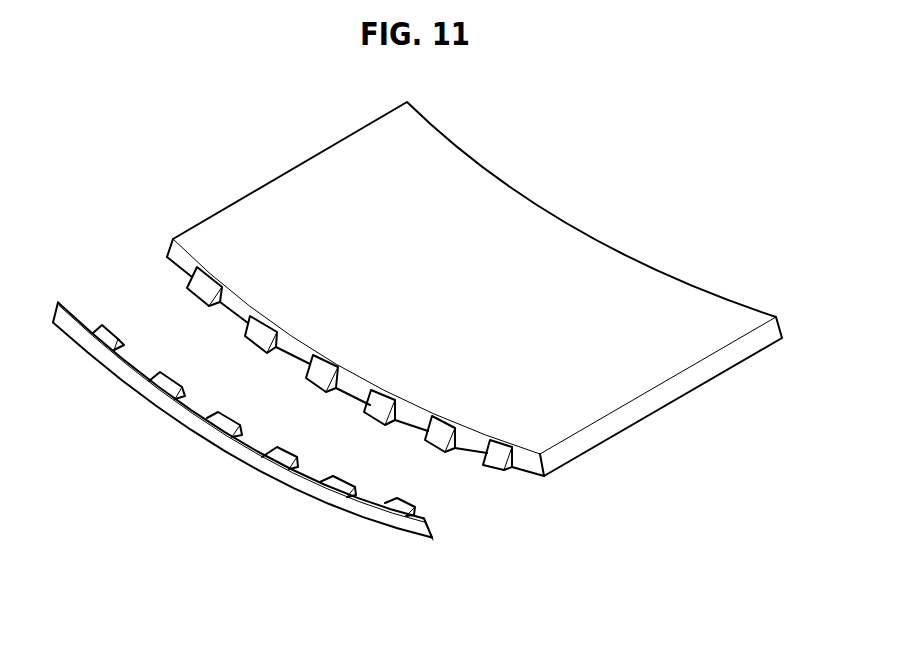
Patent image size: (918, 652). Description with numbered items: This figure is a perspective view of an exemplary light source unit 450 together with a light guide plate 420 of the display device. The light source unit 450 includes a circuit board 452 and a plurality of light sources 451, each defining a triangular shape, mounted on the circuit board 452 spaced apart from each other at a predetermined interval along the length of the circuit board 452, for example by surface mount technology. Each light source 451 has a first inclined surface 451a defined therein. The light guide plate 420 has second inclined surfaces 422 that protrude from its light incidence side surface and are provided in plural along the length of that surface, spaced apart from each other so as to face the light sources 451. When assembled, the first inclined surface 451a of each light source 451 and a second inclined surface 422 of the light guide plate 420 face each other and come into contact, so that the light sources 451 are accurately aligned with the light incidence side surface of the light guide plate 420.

The light guide plate 420 is at (567, 452).
The second inclined surface 422 is at (495, 463).
The light source unit 450 is at (243, 459).
The light source 451 is at (256, 452).
The first inclined surface 451a is at (267, 427).
The circuit board 452 is at (328, 500).